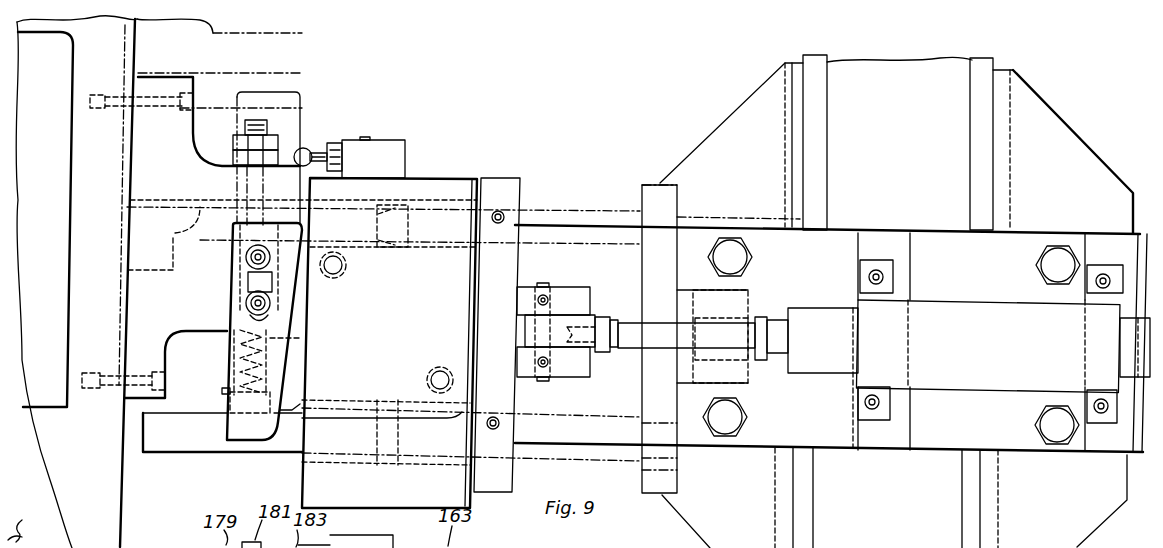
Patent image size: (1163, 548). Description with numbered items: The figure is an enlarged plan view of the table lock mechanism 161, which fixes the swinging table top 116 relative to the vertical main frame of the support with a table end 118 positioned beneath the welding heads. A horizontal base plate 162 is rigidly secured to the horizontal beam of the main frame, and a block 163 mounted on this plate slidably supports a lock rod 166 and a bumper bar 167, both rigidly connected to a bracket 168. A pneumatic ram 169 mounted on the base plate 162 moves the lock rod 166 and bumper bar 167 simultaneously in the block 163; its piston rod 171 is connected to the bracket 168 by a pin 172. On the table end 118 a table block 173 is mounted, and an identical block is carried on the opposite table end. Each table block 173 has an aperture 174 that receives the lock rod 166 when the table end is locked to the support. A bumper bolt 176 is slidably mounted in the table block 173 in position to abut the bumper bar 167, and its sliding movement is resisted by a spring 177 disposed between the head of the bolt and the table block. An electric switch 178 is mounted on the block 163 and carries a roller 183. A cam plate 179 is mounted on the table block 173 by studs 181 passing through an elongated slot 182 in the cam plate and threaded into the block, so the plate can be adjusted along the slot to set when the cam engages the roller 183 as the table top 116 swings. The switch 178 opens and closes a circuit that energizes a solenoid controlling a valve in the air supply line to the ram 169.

The table top 116 is at (98, 441).
The table end 118 is at (128, 512).
The table lock mechanism 161 is at (434, 302).
The horizontal base plate 162 is at (752, 448).
The block 163 is at (467, 178).
The lock rod 166 is at (440, 195).
The bumper bar 167 is at (180, 452).
The bracket 168 is at (513, 198).
The pneumatic ram 169 is at (972, 300).
The piston rod 171 is at (633, 346).
The pin 172 is at (542, 287).
The table block 173 is at (203, 326).
The aperture 174 is at (203, 233).
The bumper bolt 176 is at (224, 384).
The spring 177 is at (285, 340).
The electric switch 178 is at (388, 145).
The cam plate 179 is at (256, 452).
The studs 181 is at (250, 302).
The elongated slot 182 is at (282, 283).
The roller 183 is at (301, 148).